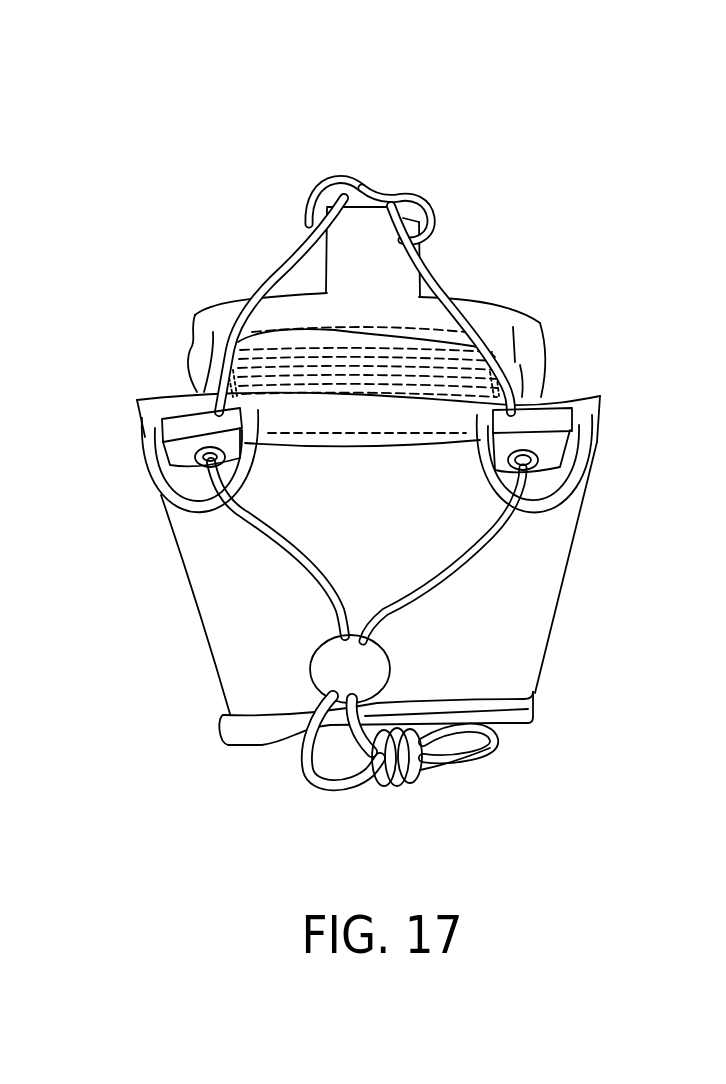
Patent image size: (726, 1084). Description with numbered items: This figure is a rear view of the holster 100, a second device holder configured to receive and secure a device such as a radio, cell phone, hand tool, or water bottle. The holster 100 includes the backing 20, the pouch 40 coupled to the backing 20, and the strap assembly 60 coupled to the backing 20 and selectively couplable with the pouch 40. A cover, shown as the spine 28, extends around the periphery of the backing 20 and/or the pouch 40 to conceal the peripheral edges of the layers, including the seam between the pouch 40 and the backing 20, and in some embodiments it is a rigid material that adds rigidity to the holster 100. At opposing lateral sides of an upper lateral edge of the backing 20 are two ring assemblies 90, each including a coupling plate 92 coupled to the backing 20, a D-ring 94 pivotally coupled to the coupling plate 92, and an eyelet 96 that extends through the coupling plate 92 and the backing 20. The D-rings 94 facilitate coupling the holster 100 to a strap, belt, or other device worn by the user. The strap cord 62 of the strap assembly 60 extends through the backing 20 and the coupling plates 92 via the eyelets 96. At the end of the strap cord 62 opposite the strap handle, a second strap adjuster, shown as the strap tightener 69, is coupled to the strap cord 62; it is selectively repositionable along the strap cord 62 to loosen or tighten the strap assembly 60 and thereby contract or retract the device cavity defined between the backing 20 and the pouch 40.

The holster 100 is at (120, 185).
The backing 20 is at (564, 619).
The spine 28 is at (558, 533).
The pouch 40 is at (518, 292).
The strap assembly 60 is at (276, 245).
The strap cord 62 is at (273, 270).
The strap tightener 69 is at (318, 669).
The ring assemblies 90 is at (136, 481).
The coupling plate 92 is at (178, 450).
The D-ring 94 is at (163, 487).
The eyelet 96 is at (210, 447).